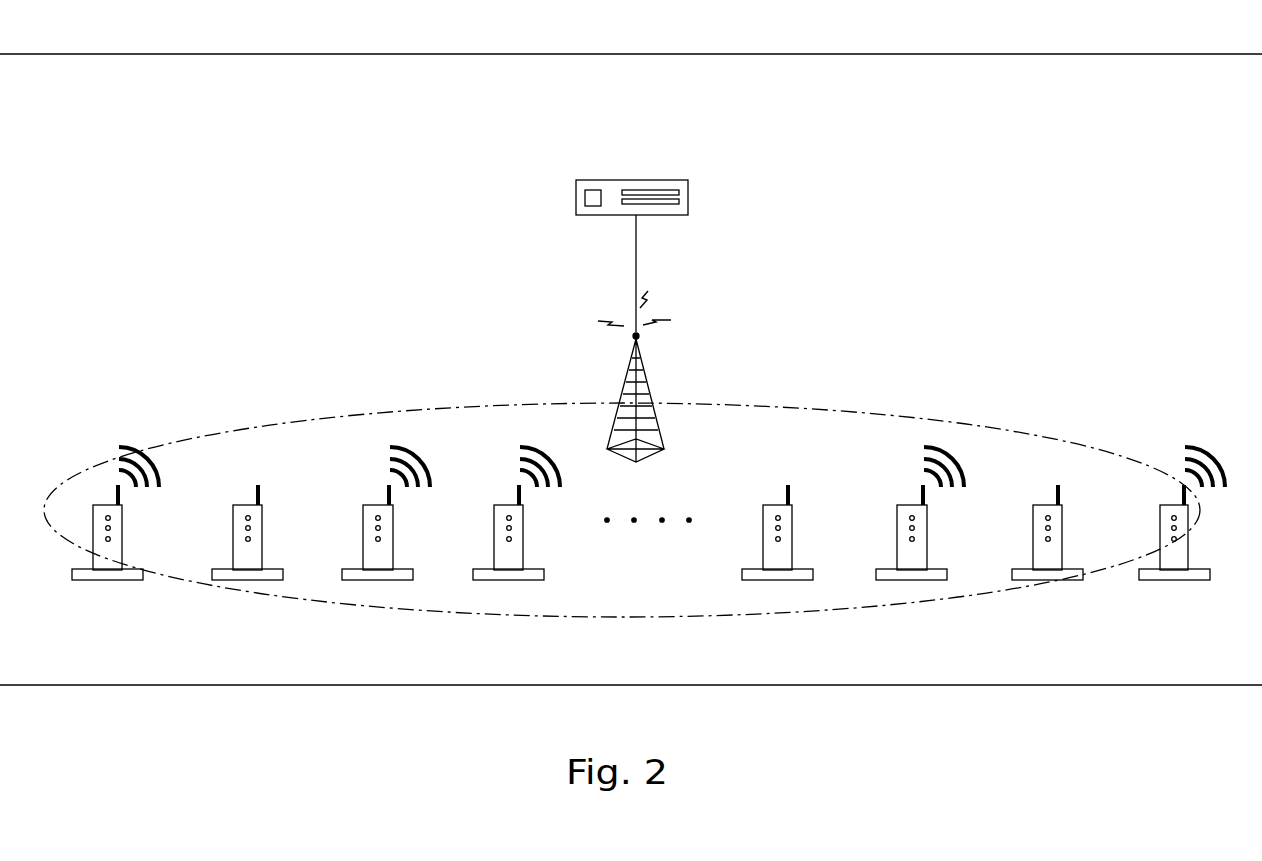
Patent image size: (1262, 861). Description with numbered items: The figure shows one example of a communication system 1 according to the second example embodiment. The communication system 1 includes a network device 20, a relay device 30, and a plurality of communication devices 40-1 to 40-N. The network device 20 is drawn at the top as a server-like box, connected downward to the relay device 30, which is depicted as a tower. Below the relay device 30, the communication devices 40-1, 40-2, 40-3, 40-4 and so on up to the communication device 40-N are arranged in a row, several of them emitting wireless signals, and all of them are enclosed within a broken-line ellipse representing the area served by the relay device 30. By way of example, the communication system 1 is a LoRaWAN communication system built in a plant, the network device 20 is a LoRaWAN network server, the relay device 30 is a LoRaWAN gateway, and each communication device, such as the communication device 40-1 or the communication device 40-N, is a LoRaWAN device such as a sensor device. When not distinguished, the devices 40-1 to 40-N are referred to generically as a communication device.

The communication system 1 is at (1090, 54).
The network device 20 is at (672, 180).
The relay device 30 is at (650, 375).
The communication device 40-1 is at (102, 580).
The communication device 40-2 is at (241, 580).
The communication device 40-3 is at (373, 580).
The communication device 40-4 is at (505, 580).
The communication device 40-N is at (1185, 580).